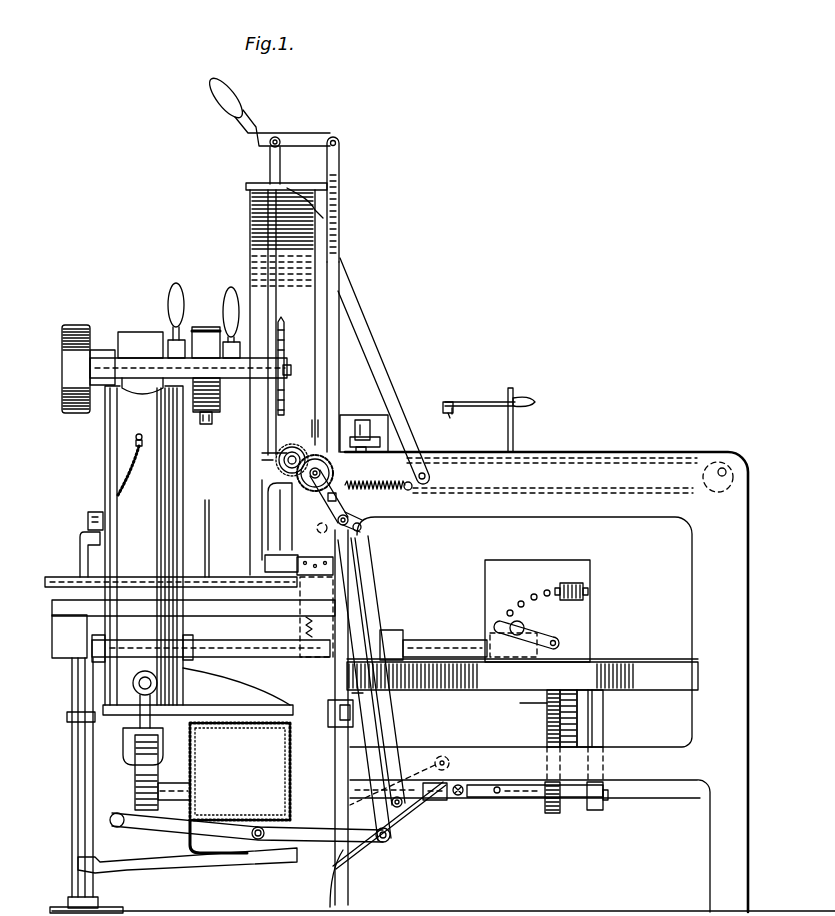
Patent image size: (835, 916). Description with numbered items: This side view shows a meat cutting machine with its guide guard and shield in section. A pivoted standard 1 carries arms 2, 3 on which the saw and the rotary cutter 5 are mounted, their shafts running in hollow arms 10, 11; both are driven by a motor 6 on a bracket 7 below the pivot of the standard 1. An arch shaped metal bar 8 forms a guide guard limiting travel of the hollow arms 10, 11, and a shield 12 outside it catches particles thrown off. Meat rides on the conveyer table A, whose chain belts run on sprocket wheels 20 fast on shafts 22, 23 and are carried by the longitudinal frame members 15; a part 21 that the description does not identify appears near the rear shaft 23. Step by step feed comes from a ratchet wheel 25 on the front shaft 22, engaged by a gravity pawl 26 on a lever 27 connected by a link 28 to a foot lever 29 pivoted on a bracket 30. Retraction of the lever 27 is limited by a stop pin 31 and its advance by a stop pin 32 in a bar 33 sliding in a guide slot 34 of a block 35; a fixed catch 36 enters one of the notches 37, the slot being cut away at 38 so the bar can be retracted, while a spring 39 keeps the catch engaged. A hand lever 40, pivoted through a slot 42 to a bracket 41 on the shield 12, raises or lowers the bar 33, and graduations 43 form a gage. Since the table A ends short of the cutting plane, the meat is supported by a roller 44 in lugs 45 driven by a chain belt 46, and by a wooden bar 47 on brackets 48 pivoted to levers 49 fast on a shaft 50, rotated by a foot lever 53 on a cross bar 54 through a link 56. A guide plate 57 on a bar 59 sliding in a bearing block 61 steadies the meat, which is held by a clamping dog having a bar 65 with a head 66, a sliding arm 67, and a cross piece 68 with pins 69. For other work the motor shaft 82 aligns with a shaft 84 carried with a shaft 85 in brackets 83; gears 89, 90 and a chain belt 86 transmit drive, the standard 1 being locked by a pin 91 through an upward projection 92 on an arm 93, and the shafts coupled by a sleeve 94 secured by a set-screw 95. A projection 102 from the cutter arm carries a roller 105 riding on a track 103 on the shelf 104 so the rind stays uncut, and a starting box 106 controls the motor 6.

The pivoted standard 1 is at (120, 438).
The arm 2 is at (205, 327).
The arm 3 is at (62, 355).
The cutter 5 is at (283, 360).
The motor 6 is at (240, 788).
The bracket 7 is at (227, 704).
The guide guard 8 is at (250, 258).
The hollow arm 10 is at (237, 345).
The hollow arm 11 is at (235, 380).
The shield 12 is at (250, 188).
The longitudinal frame members 15 is at (600, 472).
The sprocket wheels 20 is at (290, 518).
The inner frame 21 is at (708, 483).
The sprocket wheel shaft 22 is at (320, 470).
The shaft 23 is at (720, 468).
The ratchet wheel 25 is at (318, 437).
The gravity pawl 26 is at (332, 485).
The lever 27 is at (350, 510).
The link 28 is at (390, 720).
The foot lever 29 is at (240, 860).
The bracket 30 is at (273, 823).
The stop pin 31 is at (327, 850).
The stop pin 32 is at (387, 820).
The stop bar 33 is at (347, 356).
The guide slot 34 is at (360, 697).
The block 35 is at (320, 703).
The fixed catch 36 is at (413, 677).
The notches 37 is at (347, 677).
The cut away portion 38 is at (330, 708).
The spring 39 is at (393, 478).
The hand lever 40 is at (255, 128).
The bracket 41 is at (280, 160).
The slot 42 is at (285, 142).
The graduations 43 is at (338, 160).
The roller 44 is at (287, 453).
The lugs 45 is at (273, 460).
The chain belt 46 is at (288, 448).
The bar 47 is at (272, 487).
The brackets 48 is at (267, 540).
The levers 49 is at (268, 553).
The shaft 50 is at (322, 530).
The foot lever 53 is at (203, 870).
The cross bar 54 is at (640, 757).
The link 56 is at (365, 593).
The guide plate 57 is at (347, 422).
The bar 59 is at (370, 440).
The bearing block 61 is at (367, 437).
The bar 65 is at (515, 428).
The head 66 is at (522, 450).
The arm 67 is at (473, 400).
The cross piece 68 is at (445, 408).
The teeth or pins 69 is at (455, 413).
The motor shaft 82 is at (433, 760).
The brackets 83 is at (605, 703).
The shaft 84 is at (488, 798).
The shaft 85 is at (547, 730).
The chain belt 86 is at (583, 687).
The gear 89 is at (550, 815).
The gear 90 is at (530, 750).
The pin 91 is at (88, 518).
The upward projection 92 is at (87, 538).
The arm 93 is at (73, 617).
The sleeve 94 is at (438, 800).
The set-screw 95 is at (460, 797).
The projection 102 is at (200, 418).
The track 103 is at (203, 532).
The shelf 104 is at (153, 567).
The roller 105 is at (205, 425).
The starting box 106 is at (587, 630).
The conveyer table A is at (658, 460).